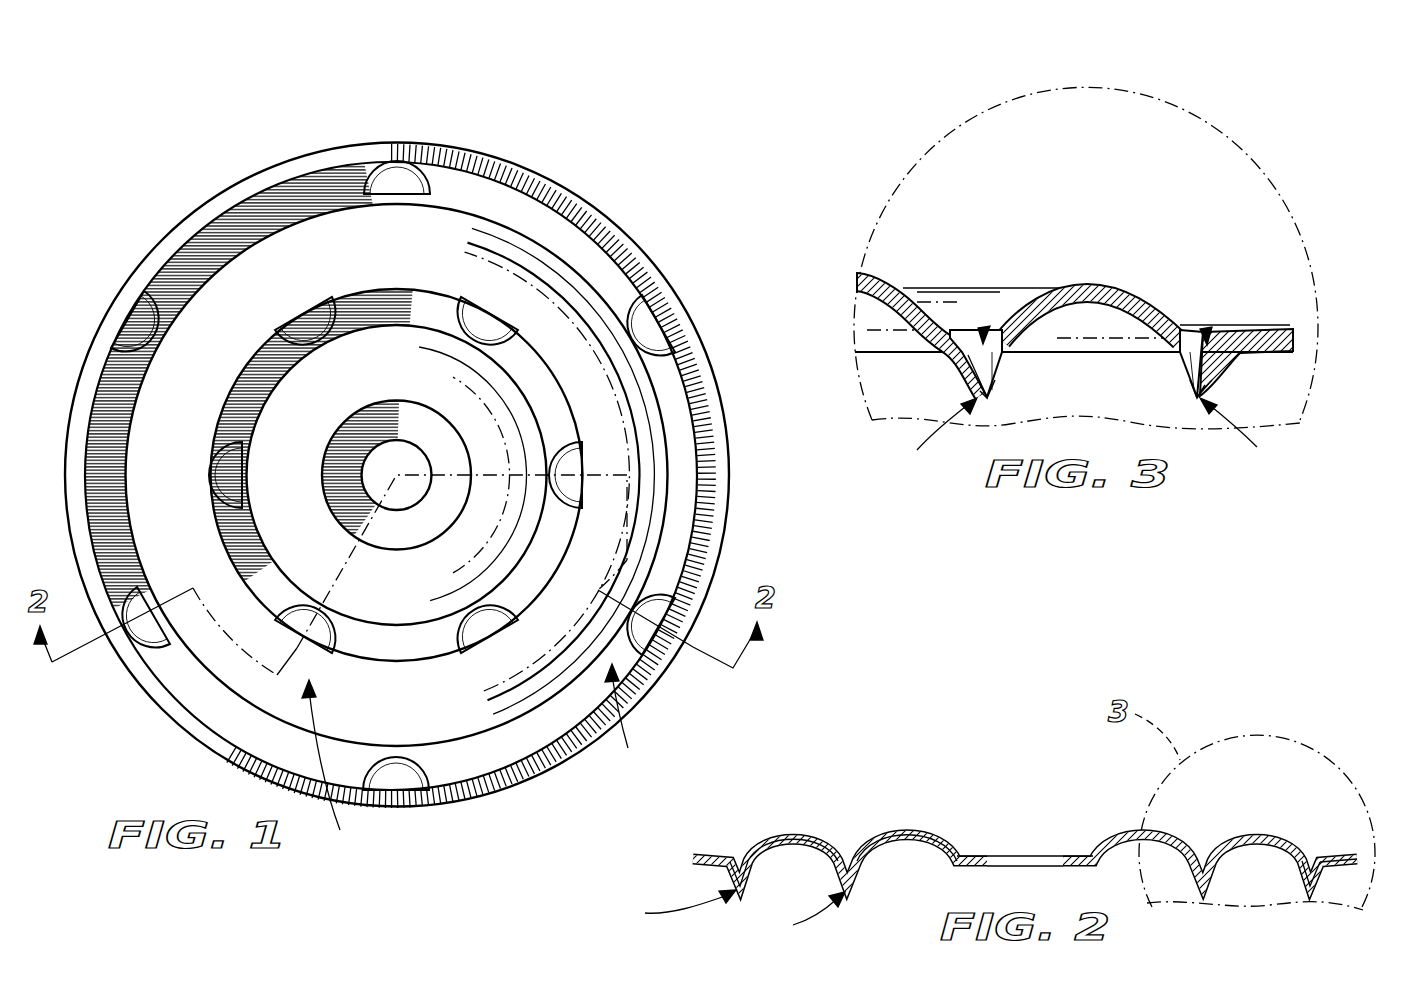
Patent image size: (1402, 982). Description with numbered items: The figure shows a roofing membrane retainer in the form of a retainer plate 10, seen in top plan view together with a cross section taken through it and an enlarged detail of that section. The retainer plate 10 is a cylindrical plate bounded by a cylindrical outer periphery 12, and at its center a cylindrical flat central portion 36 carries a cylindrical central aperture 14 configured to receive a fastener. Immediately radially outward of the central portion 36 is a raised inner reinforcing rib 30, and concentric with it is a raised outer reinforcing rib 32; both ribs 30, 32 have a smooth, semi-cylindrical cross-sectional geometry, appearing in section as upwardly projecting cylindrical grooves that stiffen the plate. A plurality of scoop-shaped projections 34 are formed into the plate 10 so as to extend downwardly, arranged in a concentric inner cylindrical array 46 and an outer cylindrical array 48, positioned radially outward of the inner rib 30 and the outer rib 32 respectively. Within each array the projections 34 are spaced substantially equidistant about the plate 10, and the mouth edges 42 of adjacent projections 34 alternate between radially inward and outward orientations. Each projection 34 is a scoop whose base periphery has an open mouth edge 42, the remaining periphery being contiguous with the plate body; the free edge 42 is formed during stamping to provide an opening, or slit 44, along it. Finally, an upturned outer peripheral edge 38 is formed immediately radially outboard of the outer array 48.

In FIG. 1, the retainer plate 10 is at (606, 130).
In FIG. 1, the outer periphery 12 is at (205, 196).
In FIG. 1, the central aperture 14 is at (400, 460).
In FIG. 2, the central aperture 14 is at (1035, 856).
In FIG. 1, the inner reinforcing rib 30 is at (316, 436).
In FIG. 3, the inner reinforcing rib 30 is at (870, 270).
In FIG. 2, the inner reinforcing rib 30 is at (912, 828).
In FIG. 1, the outer reinforcing rib 32 is at (268, 313).
In FIG. 3, the outer reinforcing rib 32 is at (1107, 283).
In FIG. 2, the outer reinforcing rib 32 is at (793, 834).
In FIG. 1, the scoop-shaped projection 34 is at (402, 170).
In FIG. 3, the scoop-shaped projection 34 is at (975, 388).
In FIG. 2, the scoop-shaped projection 34 is at (738, 889).
In FIG. 1, the flat central portion 36 is at (415, 547).
In FIG. 2, the flat central portion 36 is at (975, 856).
In FIG. 1, the upturned outer peripheral edge 38 is at (598, 212).
In FIG. 3, the upturned outer peripheral edge 38 is at (1275, 326).
In FIG. 2, the upturned outer peripheral edge 38 is at (1345, 856).
In FIG. 3, the mouth edge 42 is at (992, 374).
In FIG. 3, the slit 44 is at (983, 340).
In FIG. 1, the inner cylindrical array 46 is at (335, 769).
In FIG. 3, the inner cylindrical array 46 is at (926, 435).
In FIG. 2, the inner cylindrical array 46 is at (798, 919).
In FIG. 1, the outer cylindrical array 48 is at (630, 718).
In FIG. 3, the outer cylindrical array 48 is at (1252, 435).
In FIG. 2, the outer cylindrical array 48 is at (669, 912).